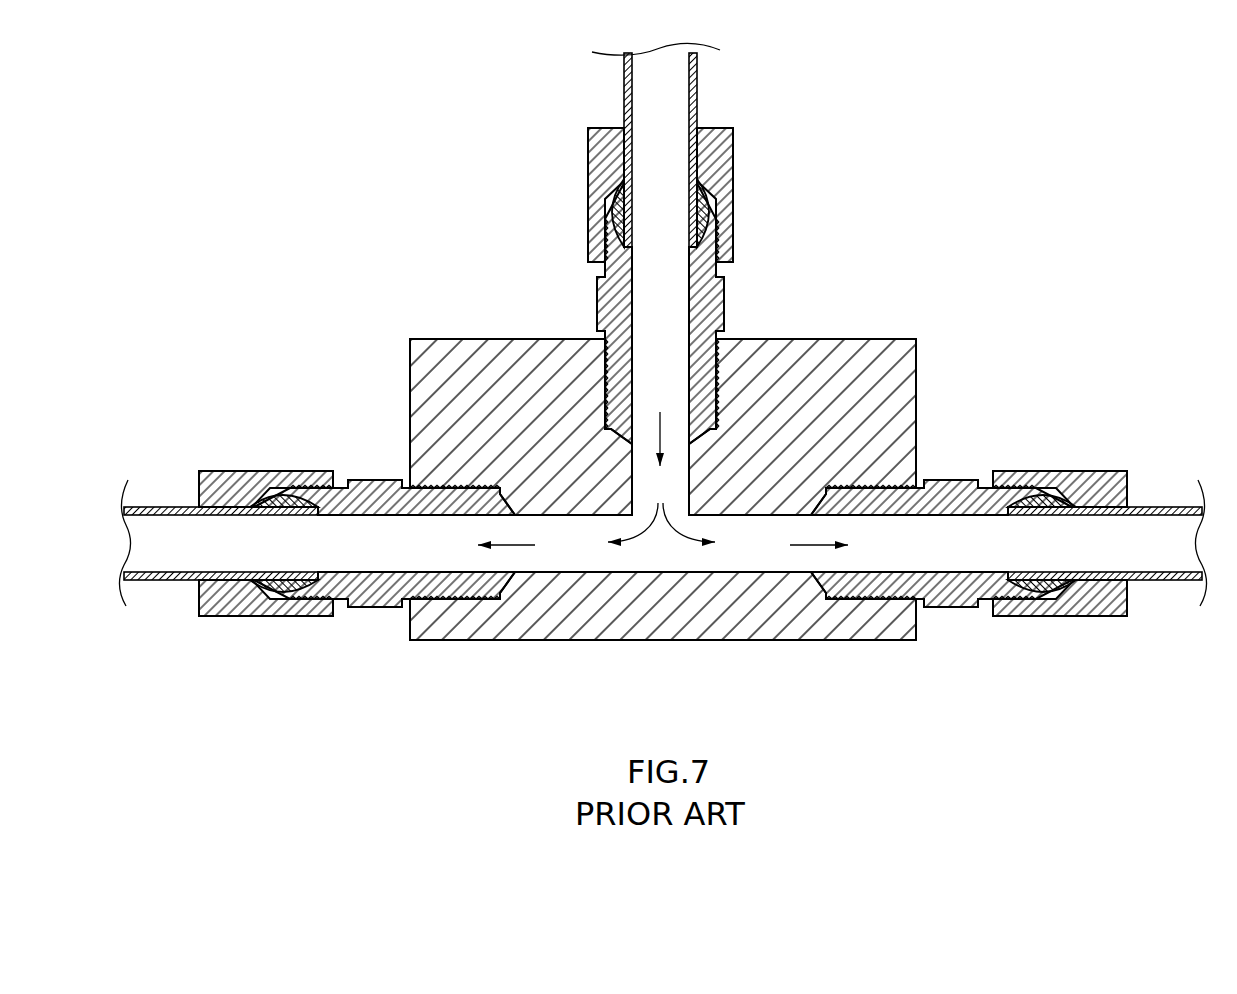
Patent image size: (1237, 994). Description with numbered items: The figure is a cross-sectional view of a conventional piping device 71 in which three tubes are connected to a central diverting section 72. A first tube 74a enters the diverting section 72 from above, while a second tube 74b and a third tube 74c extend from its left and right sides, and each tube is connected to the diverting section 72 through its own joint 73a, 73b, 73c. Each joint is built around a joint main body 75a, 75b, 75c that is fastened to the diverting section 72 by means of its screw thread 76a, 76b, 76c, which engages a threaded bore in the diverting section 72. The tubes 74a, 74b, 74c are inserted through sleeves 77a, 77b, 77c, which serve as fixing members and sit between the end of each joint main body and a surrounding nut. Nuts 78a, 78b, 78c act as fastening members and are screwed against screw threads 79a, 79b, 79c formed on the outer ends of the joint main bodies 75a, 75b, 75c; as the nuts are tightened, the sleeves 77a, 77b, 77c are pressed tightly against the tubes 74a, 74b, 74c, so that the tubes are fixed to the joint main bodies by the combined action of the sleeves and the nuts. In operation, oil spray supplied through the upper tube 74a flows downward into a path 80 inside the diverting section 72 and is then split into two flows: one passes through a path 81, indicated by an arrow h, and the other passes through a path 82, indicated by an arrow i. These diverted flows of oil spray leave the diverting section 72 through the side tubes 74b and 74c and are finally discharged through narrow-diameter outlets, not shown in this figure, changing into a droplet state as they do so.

The piping device 71 is at (502, 305).
The diverting section 72 is at (886, 339).
The joint 73a is at (787, 187).
The joint 73b is at (315, 637).
The joint 73c is at (1008, 635).
The tube 74a is at (697, 80).
The tube 74b is at (152, 507).
The tube 74c is at (1172, 507).
The joint main body 75a is at (725, 297).
The joint main body 75b is at (368, 480).
The joint main body 75c is at (955, 480).
The screw thread 76a is at (713, 392).
The screw thread 76b is at (458, 597).
The screw thread 76c is at (868, 597).
The sleeve 77a is at (602, 207).
The sleeve 77b is at (277, 600).
The sleeve 77c is at (1043, 600).
The nut 78a is at (733, 138).
The nut 78b is at (210, 471).
The nut 78c is at (1117, 471).
The screw thread 79a is at (720, 233).
The screw thread 79b is at (298, 487).
The screw thread 79c is at (1020, 487).
The path 80 is at (647, 477).
The path 81 is at (740, 557).
The path 82 is at (582, 557).
The arrow h is at (685, 535).
The arrow i is at (638, 535).